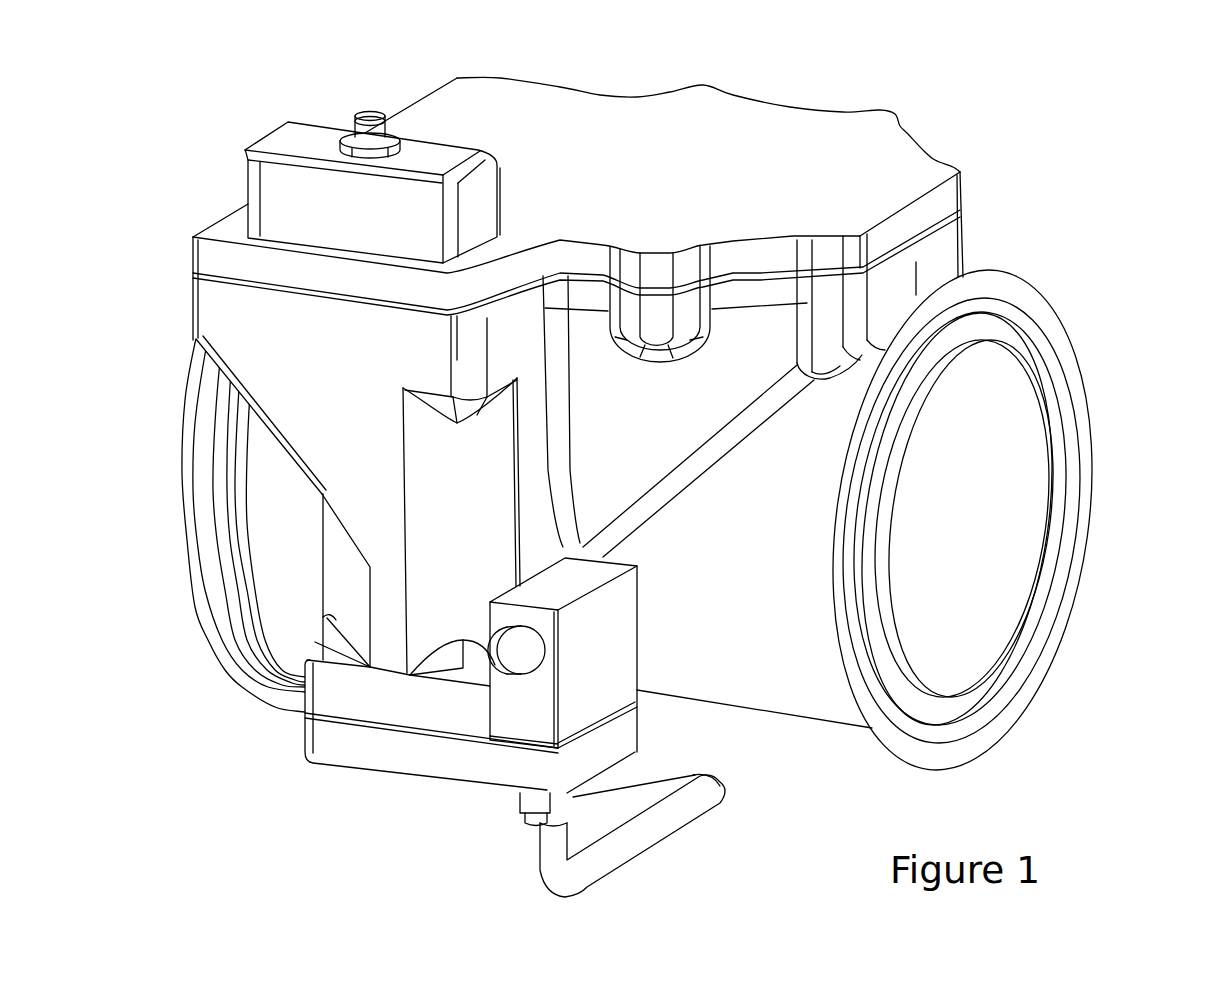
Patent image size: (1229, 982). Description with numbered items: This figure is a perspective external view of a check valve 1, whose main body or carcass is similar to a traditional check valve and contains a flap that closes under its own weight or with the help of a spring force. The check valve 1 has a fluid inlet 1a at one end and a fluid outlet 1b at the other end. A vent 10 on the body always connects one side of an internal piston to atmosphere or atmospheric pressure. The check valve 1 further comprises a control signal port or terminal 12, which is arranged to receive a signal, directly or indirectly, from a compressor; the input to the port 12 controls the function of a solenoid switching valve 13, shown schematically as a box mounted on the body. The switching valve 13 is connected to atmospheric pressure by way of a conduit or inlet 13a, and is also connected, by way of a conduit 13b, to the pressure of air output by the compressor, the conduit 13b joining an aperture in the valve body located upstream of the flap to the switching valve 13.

The check valve 1 is at (1012, 157).
The fluid inlet 1a is at (266, 521).
The fluid outlet 1b is at (989, 534).
The vent 10 is at (360, 130).
The control signal port 12 is at (515, 657).
The solenoid switching valve 13 is at (617, 628).
The conduit or inlet 13a is at (528, 800).
The conduit 13b is at (667, 778).